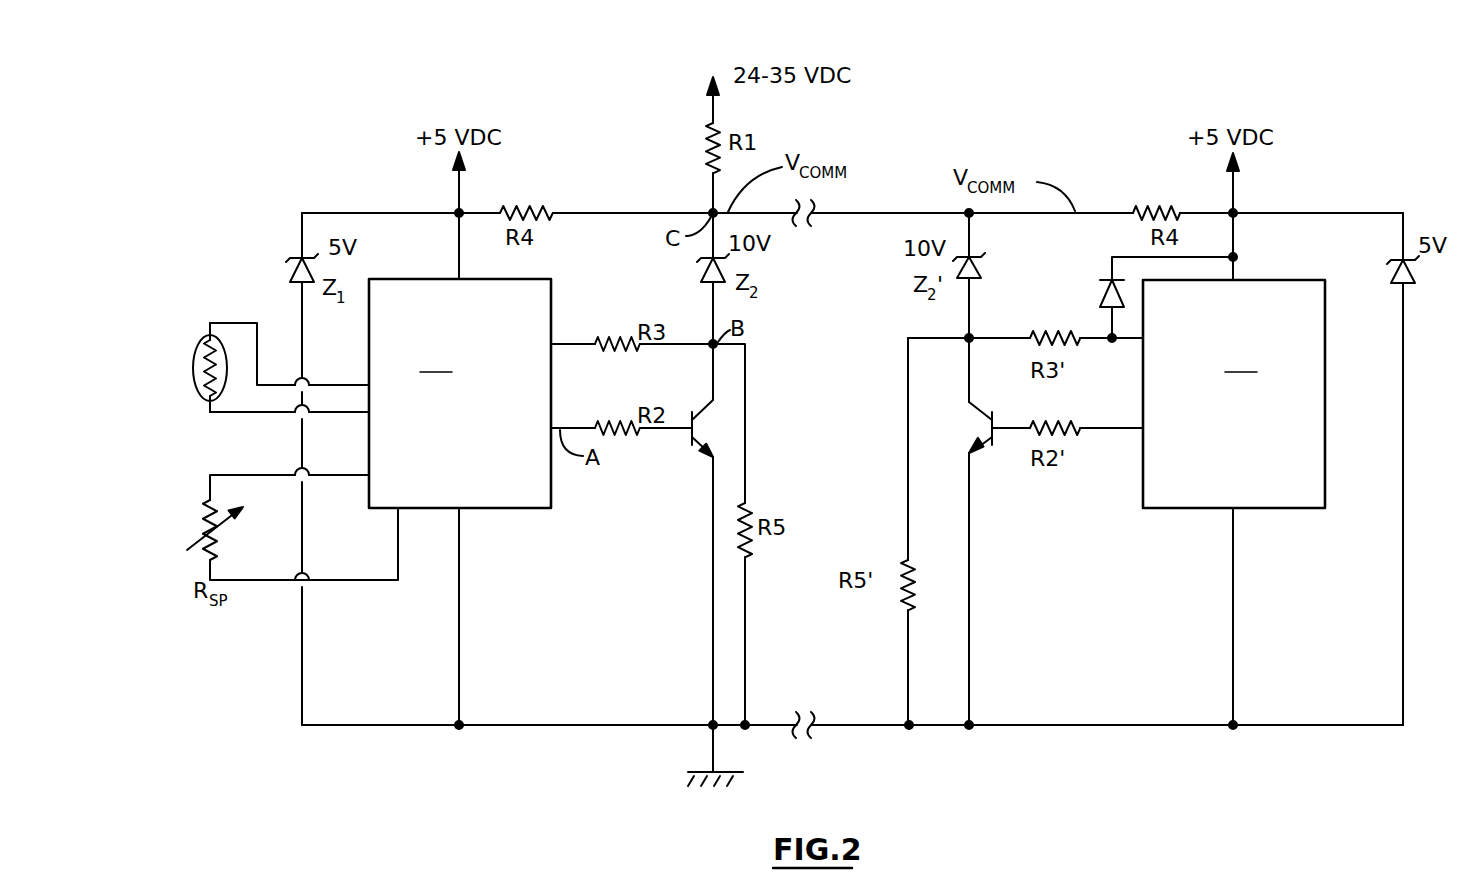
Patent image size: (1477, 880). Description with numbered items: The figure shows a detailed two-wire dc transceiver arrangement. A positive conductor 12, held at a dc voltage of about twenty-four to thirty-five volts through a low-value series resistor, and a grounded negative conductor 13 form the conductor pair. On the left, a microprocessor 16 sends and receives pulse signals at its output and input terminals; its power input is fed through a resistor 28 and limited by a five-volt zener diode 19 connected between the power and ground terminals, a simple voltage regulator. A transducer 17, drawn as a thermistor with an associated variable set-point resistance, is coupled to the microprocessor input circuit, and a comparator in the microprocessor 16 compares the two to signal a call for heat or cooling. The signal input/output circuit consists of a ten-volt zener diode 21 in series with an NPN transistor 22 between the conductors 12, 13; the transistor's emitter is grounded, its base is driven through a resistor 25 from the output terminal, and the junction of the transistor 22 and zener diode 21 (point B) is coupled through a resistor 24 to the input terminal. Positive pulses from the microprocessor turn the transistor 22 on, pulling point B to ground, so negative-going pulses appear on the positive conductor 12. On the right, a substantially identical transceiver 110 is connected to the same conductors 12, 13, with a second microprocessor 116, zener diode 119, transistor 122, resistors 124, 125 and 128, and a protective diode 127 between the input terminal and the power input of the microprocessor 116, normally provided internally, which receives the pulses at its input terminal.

The positive conductor 12 is at (570, 215).
The negative conductor 13 is at (622, 727).
The microprocessor 16 is at (488, 510).
The input transducer 17 is at (195, 398).
The zener diode 19 is at (296, 282).
The zener diode 21 is at (708, 283).
The NPN junction transistor 22 is at (690, 443).
The resistor R3 24 is at (600, 352).
The resistor R2 25 is at (600, 436).
The resistor R4 28 is at (512, 207).
The second transceiver 110 is at (1235, 731).
The second microprocessor 116 is at (1290, 278).
The zener diode 119 is at (1395, 286).
The transistor 122 is at (995, 445).
The resistor R3 prime 124 is at (1072, 334).
The resistor R2 prime 125 is at (1072, 422).
The protective diode 127 is at (1103, 281).
The resistor R4 prime 128 is at (1145, 207).